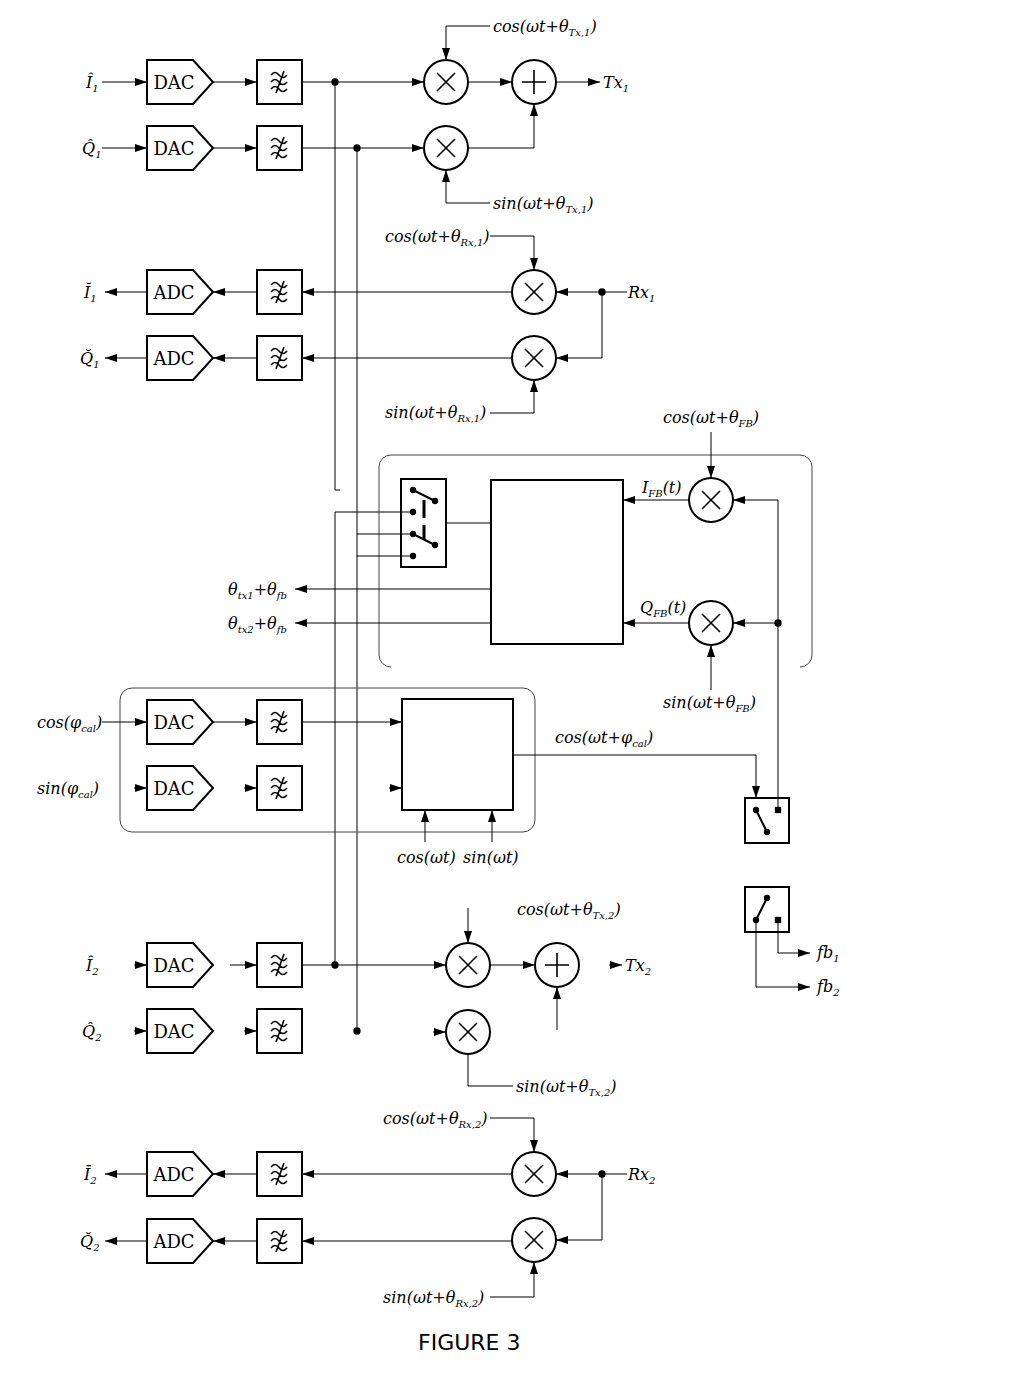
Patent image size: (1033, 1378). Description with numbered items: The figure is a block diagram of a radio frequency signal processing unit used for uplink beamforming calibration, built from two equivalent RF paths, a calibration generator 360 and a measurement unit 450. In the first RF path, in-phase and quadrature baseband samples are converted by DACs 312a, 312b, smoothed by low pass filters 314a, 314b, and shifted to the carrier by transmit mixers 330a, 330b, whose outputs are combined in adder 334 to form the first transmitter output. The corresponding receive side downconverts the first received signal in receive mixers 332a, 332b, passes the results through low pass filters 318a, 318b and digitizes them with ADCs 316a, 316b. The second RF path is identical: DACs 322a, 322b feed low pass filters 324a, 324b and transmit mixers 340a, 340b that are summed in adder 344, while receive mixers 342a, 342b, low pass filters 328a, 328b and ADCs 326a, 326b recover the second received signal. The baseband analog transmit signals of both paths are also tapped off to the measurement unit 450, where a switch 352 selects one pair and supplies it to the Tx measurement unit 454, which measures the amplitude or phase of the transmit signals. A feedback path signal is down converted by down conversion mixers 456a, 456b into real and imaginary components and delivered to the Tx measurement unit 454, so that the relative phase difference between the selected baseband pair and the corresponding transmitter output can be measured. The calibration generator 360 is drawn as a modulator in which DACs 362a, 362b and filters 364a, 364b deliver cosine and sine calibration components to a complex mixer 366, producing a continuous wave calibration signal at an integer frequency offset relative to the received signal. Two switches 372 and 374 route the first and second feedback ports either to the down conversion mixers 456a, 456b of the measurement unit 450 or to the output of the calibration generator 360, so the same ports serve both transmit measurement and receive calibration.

The digital-to-analog converter 312a is at (169, 52).
The digital-to-analog converter 312b is at (169, 174).
The low pass filter 314a is at (279, 52).
The low pass filter 314b is at (279, 174).
The analog-to-digital converter 316a is at (169, 262).
The analog-to-digital converter 316b is at (169, 386).
The low pass filter 318a is at (279, 262).
The low pass filter 318b is at (279, 386).
The transmit mixer 330a is at (430, 58).
The transmit mixer 330b is at (430, 125).
The adder 334 is at (596, 128).
The receive mixer 332a is at (613, 261).
The receive mixer 332b is at (613, 403).
The measurement unit 450 is at (592, 448).
The switch 352 is at (448, 549).
The Tx measurement unit 454 is at (542, 605).
The down conversion mixer 456a is at (767, 545).
The down conversion mixer 456b is at (716, 601).
The calibration generator 360 is at (283, 680).
The DAC 362a is at (255, 760).
The DAC 362b is at (255, 826).
The filter 364a is at (335, 760).
The filter 364b is at (335, 826).
The complex mixer 366 is at (442, 789).
The switch 372 is at (839, 785).
The switch 374 is at (839, 873).
The digital-to-analog converter 322a is at (169, 935).
The digital-to-analog converter 322b is at (169, 1059).
The low pass filter 324a is at (279, 935).
The low pass filter 324b is at (279, 1059).
The transmit mixer 340a is at (449, 948).
The transmit mixer 340b is at (449, 1014).
The adder 344 is at (573, 985).
The analog-to-digital converter 326a is at (169, 1145).
The analog-to-digital converter 326b is at (169, 1269).
The low pass filter 328a is at (279, 1145).
The low pass filter 328b is at (279, 1269).
The receive mixer 342a is at (615, 1141).
The receive mixer 342b is at (615, 1286).